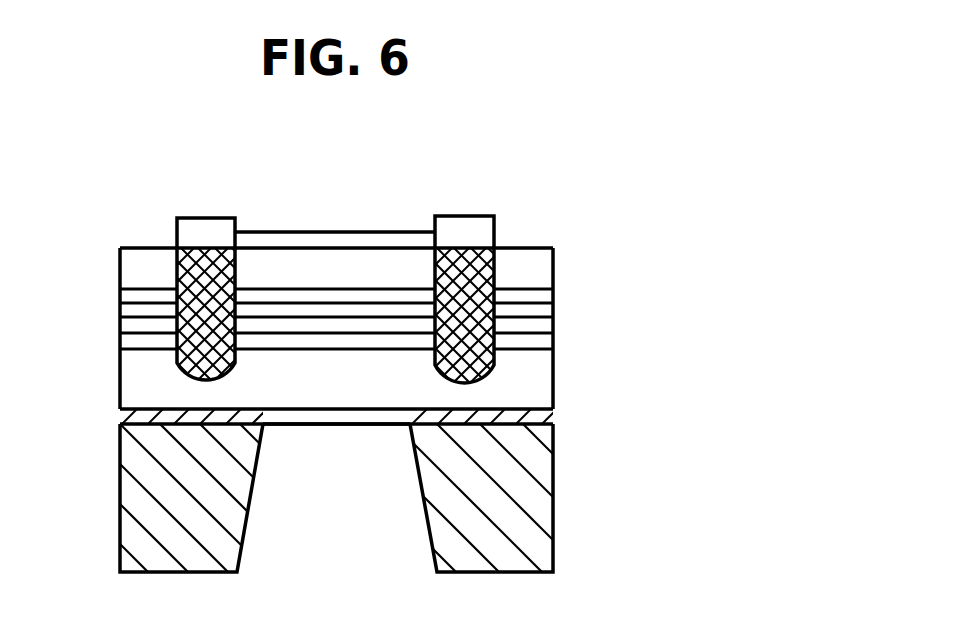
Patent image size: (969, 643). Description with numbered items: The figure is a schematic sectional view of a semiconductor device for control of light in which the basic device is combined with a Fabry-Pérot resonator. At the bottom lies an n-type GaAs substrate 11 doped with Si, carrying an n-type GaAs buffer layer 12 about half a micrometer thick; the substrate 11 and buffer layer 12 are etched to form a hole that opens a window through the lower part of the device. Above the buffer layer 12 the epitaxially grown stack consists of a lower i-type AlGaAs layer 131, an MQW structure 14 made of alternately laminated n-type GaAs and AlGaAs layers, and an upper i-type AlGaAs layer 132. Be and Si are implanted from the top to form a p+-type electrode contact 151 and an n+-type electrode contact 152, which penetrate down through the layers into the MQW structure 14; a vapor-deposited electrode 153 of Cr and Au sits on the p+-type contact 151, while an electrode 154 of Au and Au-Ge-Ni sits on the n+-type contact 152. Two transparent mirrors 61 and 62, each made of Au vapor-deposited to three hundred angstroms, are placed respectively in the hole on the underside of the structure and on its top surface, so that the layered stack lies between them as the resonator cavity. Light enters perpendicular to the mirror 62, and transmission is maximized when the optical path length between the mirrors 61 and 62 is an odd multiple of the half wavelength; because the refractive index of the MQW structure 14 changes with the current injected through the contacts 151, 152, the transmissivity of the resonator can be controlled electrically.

The substrate 11 is at (547, 513).
The buffer layer 12 is at (545, 413).
The i-type layer 131 is at (542, 381).
The i-type layer 132 is at (540, 261).
The MQW structure 14 is at (562, 283).
The p+-type electrode contact 151 is at (187, 275).
The n+-type electrode contact 152 is at (493, 260).
The electrode 153 is at (200, 223).
The electrode 154 is at (465, 218).
The transparent mirror 61 is at (360, 421).
The transparent mirror 62 is at (337, 231).